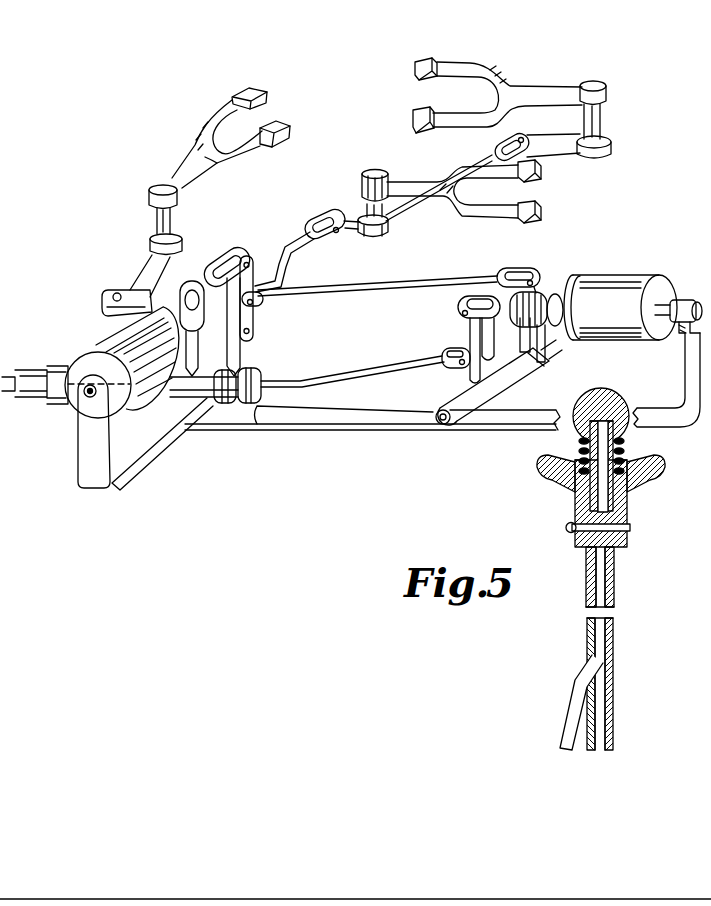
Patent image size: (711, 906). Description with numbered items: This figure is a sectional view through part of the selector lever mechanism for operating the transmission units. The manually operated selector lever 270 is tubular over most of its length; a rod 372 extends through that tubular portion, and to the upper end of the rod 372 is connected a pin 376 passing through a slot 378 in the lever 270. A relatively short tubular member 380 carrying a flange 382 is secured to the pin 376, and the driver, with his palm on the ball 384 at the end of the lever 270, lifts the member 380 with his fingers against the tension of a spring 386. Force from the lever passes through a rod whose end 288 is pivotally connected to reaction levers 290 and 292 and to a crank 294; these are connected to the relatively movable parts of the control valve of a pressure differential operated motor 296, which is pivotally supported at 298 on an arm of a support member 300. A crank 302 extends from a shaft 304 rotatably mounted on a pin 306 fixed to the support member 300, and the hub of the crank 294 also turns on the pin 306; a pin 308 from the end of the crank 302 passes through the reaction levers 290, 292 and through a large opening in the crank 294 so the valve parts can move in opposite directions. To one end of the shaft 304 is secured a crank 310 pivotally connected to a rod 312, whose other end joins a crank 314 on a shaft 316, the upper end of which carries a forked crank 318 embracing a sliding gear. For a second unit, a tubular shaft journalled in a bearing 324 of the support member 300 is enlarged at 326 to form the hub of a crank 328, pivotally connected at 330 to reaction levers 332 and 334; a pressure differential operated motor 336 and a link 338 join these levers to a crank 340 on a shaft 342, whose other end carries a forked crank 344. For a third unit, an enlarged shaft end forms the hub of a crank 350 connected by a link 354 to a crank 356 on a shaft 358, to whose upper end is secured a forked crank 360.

The selector lever 270 is at (613, 642).
The other end of rod 288 is at (458, 370).
The reaction lever 290 is at (463, 328).
The reaction lever 292 is at (538, 370).
The crank 294 is at (483, 382).
The pressure differential operated motor 296 is at (613, 283).
The pivotal support 298 is at (694, 300).
The support member 300 is at (497, 430).
The crank 302 is at (484, 368).
The shaft 304 is at (540, 364).
The pin 306 is at (437, 411).
The pin 308 is at (432, 346).
The crank 310 is at (540, 287).
The rod 312 is at (393, 278).
The crank 314 is at (138, 270).
The shaft 316 is at (178, 223).
The crank 318 is at (182, 174).
The bearing 324 is at (212, 388).
The enlarged end of tubular shaft 326 is at (250, 395).
The crank 328 is at (247, 356).
The pivotal connection 330 is at (252, 328).
The reaction lever 332 is at (217, 327).
The reaction lever 334 is at (262, 318).
The pressure differential operated motor 336 is at (100, 342).
The link 338 is at (283, 252).
The crank 340 is at (360, 236).
The shaft 342 is at (362, 203).
The crank 344 is at (400, 182).
The crank 350 is at (158, 393).
The link 354 is at (493, 157).
The crank 356 is at (550, 143).
The shaft 358 is at (606, 122).
The crank 360 is at (547, 90).
The rod 372 is at (573, 705).
The pin 376 is at (630, 528).
The slot 378 is at (612, 570).
The tubular member 380 is at (578, 513).
The flange 382 is at (560, 476).
The ball 384 is at (613, 398).
The spring 386 is at (580, 453).